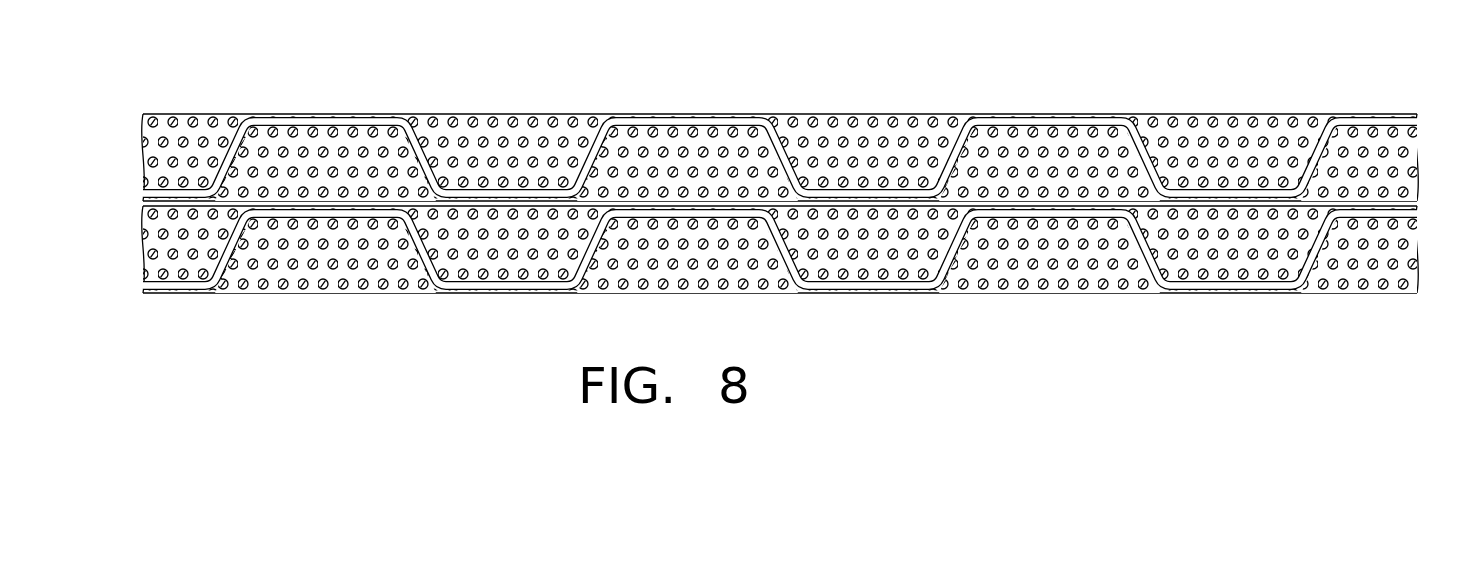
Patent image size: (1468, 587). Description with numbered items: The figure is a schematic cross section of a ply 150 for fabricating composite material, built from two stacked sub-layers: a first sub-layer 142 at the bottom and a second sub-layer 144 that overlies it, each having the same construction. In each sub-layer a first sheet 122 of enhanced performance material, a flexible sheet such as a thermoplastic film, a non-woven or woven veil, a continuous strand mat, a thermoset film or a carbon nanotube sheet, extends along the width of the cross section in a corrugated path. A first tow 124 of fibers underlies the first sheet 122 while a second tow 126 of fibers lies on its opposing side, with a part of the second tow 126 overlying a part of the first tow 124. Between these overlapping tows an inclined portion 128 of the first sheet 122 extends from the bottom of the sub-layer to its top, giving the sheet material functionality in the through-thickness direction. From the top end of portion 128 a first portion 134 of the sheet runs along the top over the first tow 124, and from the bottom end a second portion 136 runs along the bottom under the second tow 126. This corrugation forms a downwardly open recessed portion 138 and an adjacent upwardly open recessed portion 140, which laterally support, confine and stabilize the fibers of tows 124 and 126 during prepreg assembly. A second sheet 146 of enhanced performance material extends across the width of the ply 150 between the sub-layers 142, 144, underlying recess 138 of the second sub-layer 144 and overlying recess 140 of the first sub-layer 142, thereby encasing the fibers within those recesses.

The first sheet of enhanced performance material 122 is at (283, 217).
The first tow of fibers 124 is at (625, 163).
The second tow of fibers 126 is at (864, 148).
The portion of first sheet 128 is at (790, 160).
The first portion of sheet 134 is at (600, 117).
The second portion of first sheet 136 is at (935, 288).
The recessed portion 138 is at (649, 148).
The recessed portion 140 is at (920, 153).
The first sub-layer 142 is at (1435, 270).
The second sub-layer 144 is at (1424, 152).
The second sheet of enhanced performance material 146 is at (143, 204).
The ply 150 is at (765, 187).